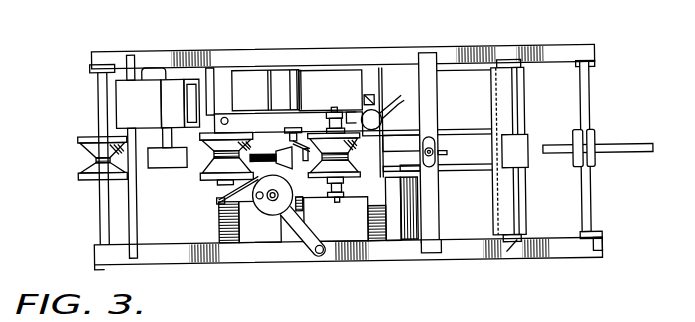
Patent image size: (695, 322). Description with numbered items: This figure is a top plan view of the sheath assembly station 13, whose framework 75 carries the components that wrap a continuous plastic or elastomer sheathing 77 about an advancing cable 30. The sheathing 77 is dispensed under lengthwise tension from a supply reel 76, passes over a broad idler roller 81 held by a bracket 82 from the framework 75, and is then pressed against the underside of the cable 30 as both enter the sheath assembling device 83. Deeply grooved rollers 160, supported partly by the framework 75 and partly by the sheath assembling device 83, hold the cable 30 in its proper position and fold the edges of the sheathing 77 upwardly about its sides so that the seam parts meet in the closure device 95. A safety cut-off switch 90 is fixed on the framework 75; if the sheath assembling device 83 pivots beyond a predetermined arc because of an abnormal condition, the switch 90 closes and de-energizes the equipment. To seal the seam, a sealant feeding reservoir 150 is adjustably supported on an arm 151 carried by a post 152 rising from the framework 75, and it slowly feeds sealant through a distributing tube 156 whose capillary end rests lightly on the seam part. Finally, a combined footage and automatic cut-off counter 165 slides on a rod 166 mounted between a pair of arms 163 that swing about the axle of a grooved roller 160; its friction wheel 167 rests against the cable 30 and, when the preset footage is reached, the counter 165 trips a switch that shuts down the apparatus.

The sheath assembly station 13 is at (348, 183).
The cable 30 is at (620, 149).
The framework 75 is at (453, 263).
The supply reel 76 is at (442, 134).
The sheathing 77 is at (465, 145).
The idler roller 81 is at (522, 221).
The bracket 82 is at (516, 245).
The sheath assembling device 83 is at (323, 94).
The safety cut-off switch 90 is at (374, 110).
The closure device 95 is at (263, 148).
The sealant feeding reservoir 150 is at (262, 216).
The arm 151 is at (312, 241).
The post 152 is at (319, 252).
The distributing tube 156 is at (220, 199).
The deeply grooved rollers 160 is at (83, 166).
The arms 163 is at (102, 46).
The footage and automatic cut-off counter 165 is at (148, 82).
The rod 166 is at (127, 55).
The friction wheel 167 is at (162, 162).